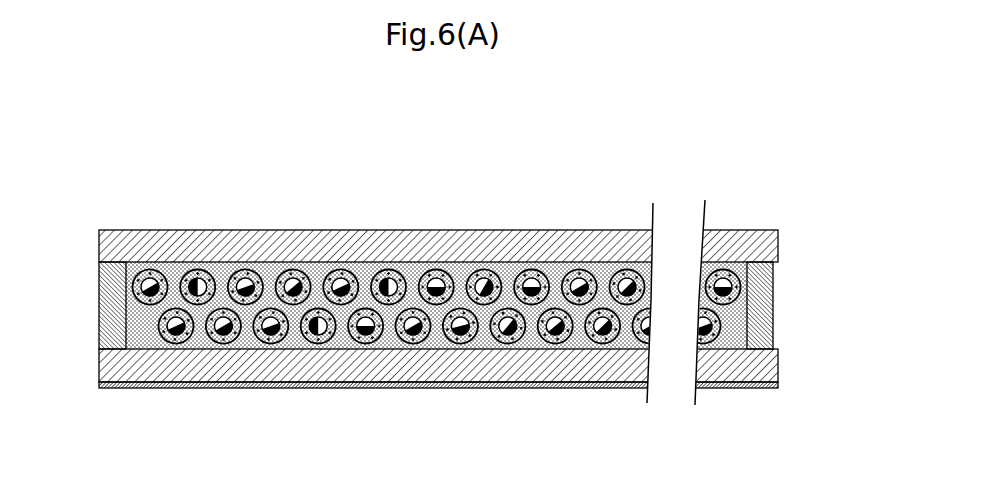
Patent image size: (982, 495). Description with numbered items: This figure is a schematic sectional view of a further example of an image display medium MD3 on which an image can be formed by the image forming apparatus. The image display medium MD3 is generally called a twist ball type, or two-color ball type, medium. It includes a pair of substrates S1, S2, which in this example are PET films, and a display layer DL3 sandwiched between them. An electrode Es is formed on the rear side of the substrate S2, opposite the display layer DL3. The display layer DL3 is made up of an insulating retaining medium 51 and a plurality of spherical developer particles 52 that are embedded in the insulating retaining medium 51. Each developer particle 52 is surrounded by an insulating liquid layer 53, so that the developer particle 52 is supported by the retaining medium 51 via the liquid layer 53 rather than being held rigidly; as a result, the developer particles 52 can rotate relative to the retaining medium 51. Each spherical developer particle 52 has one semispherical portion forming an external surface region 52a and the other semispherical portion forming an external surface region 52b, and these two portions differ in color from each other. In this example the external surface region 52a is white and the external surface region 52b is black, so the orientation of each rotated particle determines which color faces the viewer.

The image display medium MD3 is at (117, 203).
The insulating retaining medium 51 is at (140, 313).
The spherical developer particle 52 is at (198, 283).
The external surface region 52a is at (385, 282).
The external surface region 52b is at (407, 277).
The insulating liquid layer 53 is at (190, 270).
The substrate S1 is at (778, 243).
The substrate S2 is at (765, 369).
The display layer DL3 is at (780, 305).
The electrode Es is at (776, 387).